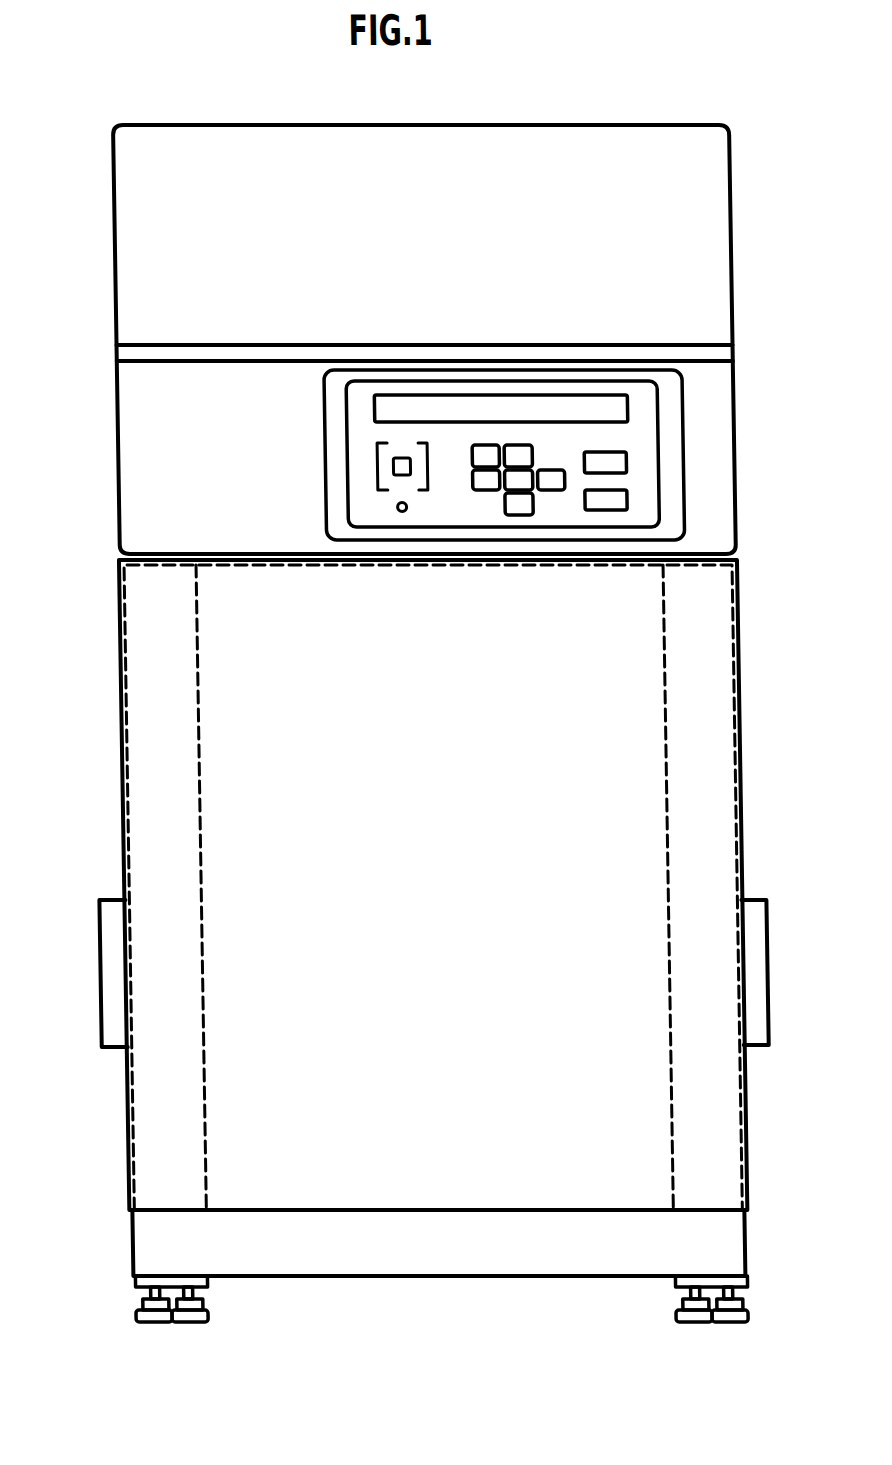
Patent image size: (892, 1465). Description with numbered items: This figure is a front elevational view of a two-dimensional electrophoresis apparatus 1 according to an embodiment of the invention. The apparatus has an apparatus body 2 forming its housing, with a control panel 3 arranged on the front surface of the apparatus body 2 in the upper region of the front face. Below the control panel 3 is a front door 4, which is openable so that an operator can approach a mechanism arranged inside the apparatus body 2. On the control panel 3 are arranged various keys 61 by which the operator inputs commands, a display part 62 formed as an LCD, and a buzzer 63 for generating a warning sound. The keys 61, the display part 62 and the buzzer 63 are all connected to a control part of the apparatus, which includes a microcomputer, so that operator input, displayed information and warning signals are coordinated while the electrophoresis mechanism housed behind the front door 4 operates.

The two-dimensional electrophoresis apparatus 1 is at (489, 121).
The apparatus body 2 is at (712, 233).
The control panel 3 is at (684, 465).
The front door 4 is at (698, 772).
The keys 61 is at (595, 508).
The display part 62 is at (492, 405).
The buzzer 63 is at (377, 474).